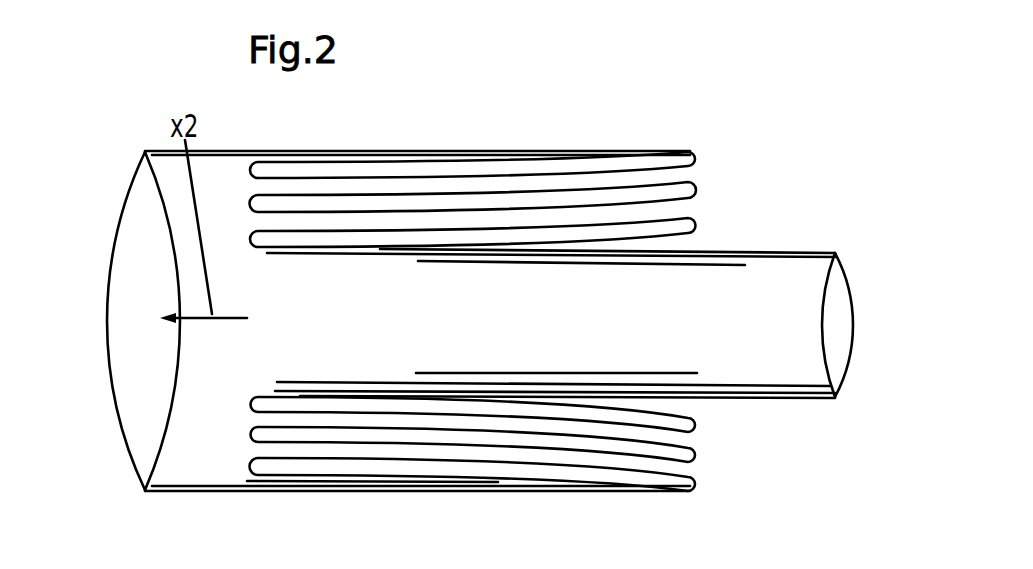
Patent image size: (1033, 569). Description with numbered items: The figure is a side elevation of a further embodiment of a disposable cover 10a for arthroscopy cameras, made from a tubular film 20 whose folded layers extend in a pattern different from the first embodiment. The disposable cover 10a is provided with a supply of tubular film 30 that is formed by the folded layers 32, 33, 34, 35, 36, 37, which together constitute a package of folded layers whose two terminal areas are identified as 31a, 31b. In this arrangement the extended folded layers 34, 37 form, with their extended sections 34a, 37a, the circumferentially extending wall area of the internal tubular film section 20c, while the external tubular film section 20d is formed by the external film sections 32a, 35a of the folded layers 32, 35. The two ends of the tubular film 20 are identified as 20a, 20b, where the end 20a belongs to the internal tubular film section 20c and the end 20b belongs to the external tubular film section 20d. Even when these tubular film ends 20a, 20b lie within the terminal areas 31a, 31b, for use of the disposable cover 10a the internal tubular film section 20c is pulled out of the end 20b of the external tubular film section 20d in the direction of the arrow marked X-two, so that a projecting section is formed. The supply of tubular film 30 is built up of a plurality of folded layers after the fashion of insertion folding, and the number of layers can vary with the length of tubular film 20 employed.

The disposable cover 10a is at (480, 137).
The tubular film 20 is at (386, 151).
The tubular film end 20a is at (810, 272).
The tubular film end 20b is at (137, 452).
The internal tubular film section 20c is at (795, 372).
The external tubular film section 20d is at (192, 472).
The supply of tubular film 30 is at (428, 466).
The terminal area 31a is at (253, 497).
The terminal area 31b is at (656, 497).
The folded layer 32 is at (695, 489).
The external film section 32a is at (308, 495).
The folded layer 33 is at (695, 457).
The folded layer 34 is at (695, 425).
The extended section 34a is at (538, 398).
The folded layer 35 is at (694, 159).
The external film section 35a is at (347, 151).
The folded layer 36 is at (696, 190).
The folded layer 37 is at (696, 227).
The extended section 37a is at (548, 258).